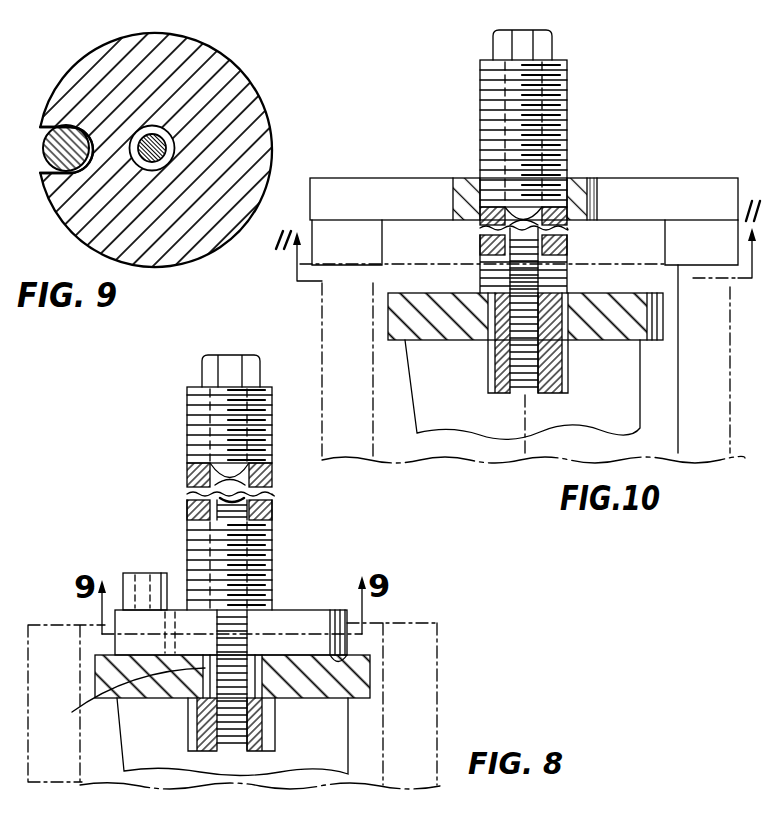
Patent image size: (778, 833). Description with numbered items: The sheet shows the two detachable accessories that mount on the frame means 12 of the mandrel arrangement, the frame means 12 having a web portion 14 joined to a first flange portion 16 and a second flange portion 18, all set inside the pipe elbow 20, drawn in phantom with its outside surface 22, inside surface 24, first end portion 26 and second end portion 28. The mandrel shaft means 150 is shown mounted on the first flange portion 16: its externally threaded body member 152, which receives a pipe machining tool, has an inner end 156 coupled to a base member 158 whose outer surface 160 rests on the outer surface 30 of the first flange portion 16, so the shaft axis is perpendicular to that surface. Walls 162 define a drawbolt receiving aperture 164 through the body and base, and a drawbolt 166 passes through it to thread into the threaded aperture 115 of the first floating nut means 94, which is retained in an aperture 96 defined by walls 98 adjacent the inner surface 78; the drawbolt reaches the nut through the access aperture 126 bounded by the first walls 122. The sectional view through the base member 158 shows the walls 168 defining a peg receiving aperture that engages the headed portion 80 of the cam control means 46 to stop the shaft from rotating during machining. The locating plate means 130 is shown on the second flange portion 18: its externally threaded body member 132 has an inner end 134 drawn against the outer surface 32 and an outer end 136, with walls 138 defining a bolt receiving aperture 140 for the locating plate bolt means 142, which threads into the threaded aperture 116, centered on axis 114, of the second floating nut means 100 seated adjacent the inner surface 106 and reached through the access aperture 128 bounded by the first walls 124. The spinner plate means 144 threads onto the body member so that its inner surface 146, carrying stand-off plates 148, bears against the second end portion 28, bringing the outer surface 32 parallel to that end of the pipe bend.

In FIG. 10, the frame means 12 is at (640, 398).
In FIG. 10, the web portion 14 is at (622, 416).
In FIG. 8, the web portion 14 is at (349, 743).
In FIG. 8, the first flange portion 16 is at (232, 654).
In FIG. 10, the second flange portion 18 is at (630, 291).
In FIG. 10, the pipe elbow 20 is at (730, 360).
In FIG. 8, the pipe elbow 20 is at (437, 687).
In FIG. 8, the outside surface 22 is at (28, 624).
In FIG. 8, the inside surface 24 is at (88, 622).
In FIG. 8, the first end portion 26 is at (437, 624).
In FIG. 10, the second end portion 28 is at (728, 270).
In FIG. 8, the outer surface 30 is at (437, 629).
In FIG. 10, the outer surface 32 is at (582, 291).
In FIG. 8, the cam control means 46 is at (158, 572).
In FIG. 8, the inner surface 78 is at (350, 700).
In FIG. 9, the headed portion 80 is at (46, 163).
In FIG. 8, the headed portion 80 is at (123, 584).
In FIG. 8, the first floating nut means 94 is at (262, 753).
In FIG. 8, the aperture 96 is at (190, 743).
In FIG. 8, the walls 98 is at (190, 715).
In FIG. 10, the second floating nut means 100 is at (502, 424).
In FIG. 10, the inner surface 106 is at (650, 338).
In FIG. 10, the axis 114 is at (526, 443).
In FIG. 8, the threaded aperture 115 is at (228, 740).
In FIG. 10, the threaded aperture 116 is at (528, 393).
In FIG. 8, the first walls 122 is at (252, 686).
In FIG. 10, the first walls 124 is at (525, 302).
In FIG. 8, the aperture 126 is at (262, 666).
In FIG. 10, the aperture 128 is at (506, 356).
In FIG. 10, the locating plate means 130 is at (541, 106).
In FIG. 10, the externally threaded body member 132 is at (570, 93).
In FIG. 10, the inner end 134 is at (483, 272).
In FIG. 10, the outer end 136 is at (480, 65).
In FIG. 10, the walls 138 is at (592, 206).
In FIG. 10, the bolt receiving aperture 140 is at (548, 193).
In FIG. 10, the locating plate bolt means 142 is at (549, 39).
In FIG. 10, the spinner plate means 144 is at (738, 178).
In FIG. 10, the inner surface 146 is at (440, 222).
In FIG. 10, the stand-off plates 148 is at (697, 232).
In FIG. 8, the mandrel shaft means 150 is at (190, 388).
In FIG. 8, the externally threaded body member 152 is at (186, 421).
In FIG. 8, the inner end 156 is at (276, 606).
In FIG. 9, the base member 158 is at (272, 145).
In FIG. 8, the base member 158 is at (318, 607).
In FIG. 8, the outer surface 160 is at (360, 657).
In FIG. 8, the walls 162 is at (200, 490).
In FIG. 8, the drawbolt receiving aperture 164 is at (188, 473).
In FIG. 8, the drawbolt 166 is at (210, 357).
In FIG. 9, the walls 168 is at (42, 126).
In FIG. 8, the walls 168 is at (120, 696).